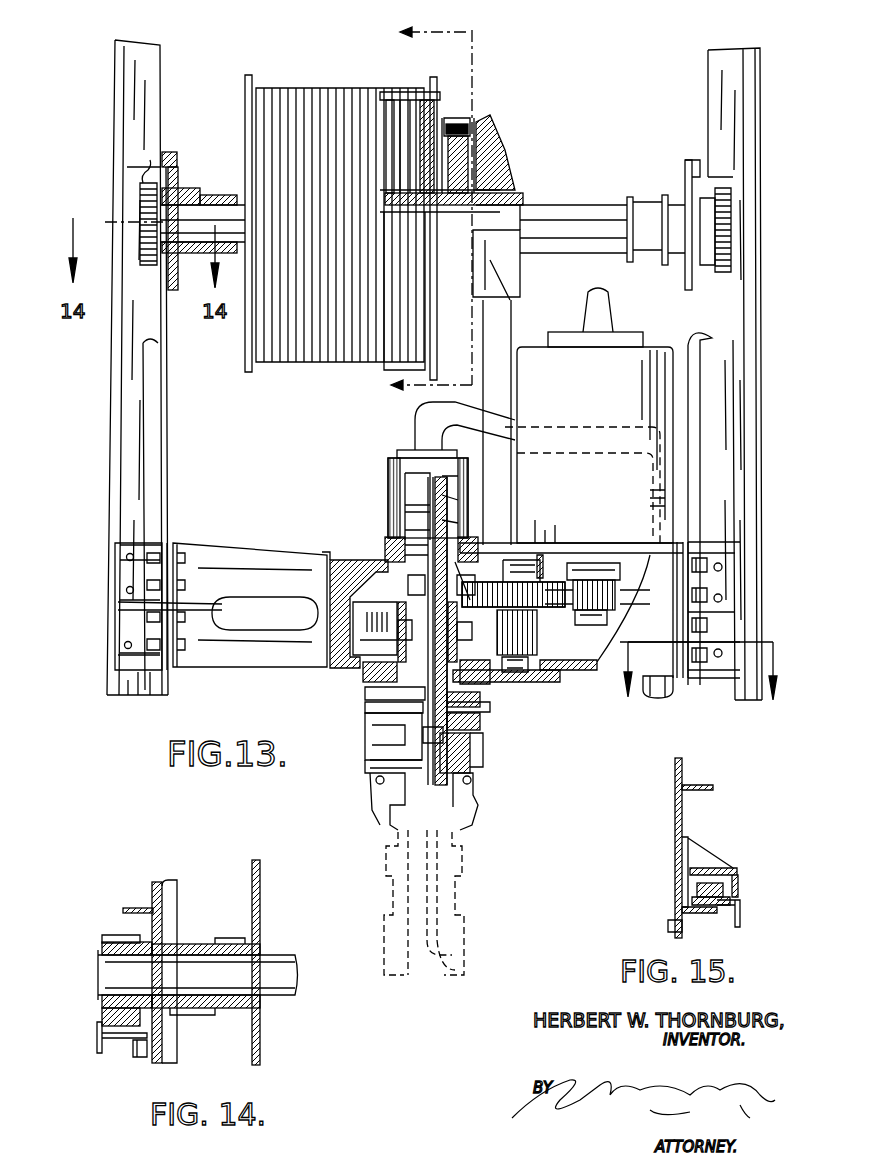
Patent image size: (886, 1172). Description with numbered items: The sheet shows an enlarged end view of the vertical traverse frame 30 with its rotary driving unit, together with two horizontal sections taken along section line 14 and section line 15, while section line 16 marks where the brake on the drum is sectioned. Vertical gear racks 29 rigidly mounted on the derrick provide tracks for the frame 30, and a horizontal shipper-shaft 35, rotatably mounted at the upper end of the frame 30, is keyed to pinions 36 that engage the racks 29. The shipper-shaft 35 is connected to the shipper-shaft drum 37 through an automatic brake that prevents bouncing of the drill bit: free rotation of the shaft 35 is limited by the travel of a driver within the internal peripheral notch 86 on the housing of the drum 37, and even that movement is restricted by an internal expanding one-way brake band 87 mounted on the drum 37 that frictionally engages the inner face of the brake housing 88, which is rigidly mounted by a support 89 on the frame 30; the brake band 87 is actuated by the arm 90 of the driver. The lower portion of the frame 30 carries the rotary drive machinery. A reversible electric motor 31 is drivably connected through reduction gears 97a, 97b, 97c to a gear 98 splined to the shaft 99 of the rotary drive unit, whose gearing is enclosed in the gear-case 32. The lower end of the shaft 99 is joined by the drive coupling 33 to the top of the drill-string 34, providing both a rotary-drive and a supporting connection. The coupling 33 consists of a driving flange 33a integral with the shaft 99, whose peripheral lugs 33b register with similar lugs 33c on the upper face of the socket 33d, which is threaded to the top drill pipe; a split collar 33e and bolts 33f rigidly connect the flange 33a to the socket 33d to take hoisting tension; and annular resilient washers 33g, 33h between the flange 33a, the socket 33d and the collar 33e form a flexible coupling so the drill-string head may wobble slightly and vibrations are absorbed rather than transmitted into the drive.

In FIG. 13, the section line 14— 14 is at (150, 70).
In FIG. 14, the section line 14— 14 is at (100, 1038).
In FIG. 15, the section line 14— 14 is at (742, 915).
In FIG. 13, the section line 15— 15 is at (705, 673).
In FIG. 13, the section line 16— 16 is at (411, 210).
In FIG. 14, the vertical gear racks 29 is at (103, 1015).
In FIG. 15, the vertical gear racks 29 is at (710, 887).
In FIG. 13, the vertical traverse frame 30 is at (716, 350).
In FIG. 14, the vertical traverse frame 30 is at (165, 1036).
In FIG. 15, the vertical traverse frame 30 is at (683, 812).
In FIG. 13, the electric motor 31 is at (540, 360).
In FIG. 13, the gear-case 32 is at (388, 468).
In FIG. 13, the drive coupling 33 is at (372, 688).
In FIG. 13, the driving flange 33a is at (370, 708).
In FIG. 13, the peripheral lugs 33b is at (372, 748).
In FIG. 13, the lugs 33c is at (368, 740).
In FIG. 13, the socket 33d is at (480, 755).
In FIG. 13, the split collar 33e is at (368, 694).
In FIG. 13, the bolts 33f is at (363, 680).
In FIG. 13, the annular resilient washer 33g is at (480, 728).
In FIG. 13, the annular resilient washer 33h is at (480, 700).
In FIG. 13, the drill-string 34 is at (440, 935).
In FIG. 13, the shipper-shaft 35 is at (565, 225).
In FIG. 14, the shipper-shaft 35 is at (196, 955).
In FIG. 13, the pinions 36 is at (150, 183).
In FIG. 14, the pinions 36 is at (124, 937).
In FIG. 13, the shipper-shaft drum 37 is at (318, 100).
In FIG. 14, the shipper-shaft drum 37 is at (252, 866).
In FIG. 13, the internal peripheral notch 86 is at (415, 92).
In FIG. 13, the one-way brake band 87 is at (462, 128).
In FIG. 13, the brake housing 88 is at (512, 184).
In FIG. 13, the support 89 is at (495, 392).
In FIG. 13, the arm of driver 90 is at (470, 160).
In FIG. 13, the reduction gear 97a is at (615, 580).
In FIG. 13, the reduction gear 97b is at (552, 600).
In FIG. 13, the reduction gear 97c is at (540, 643).
In FIG. 13, the gear 98 is at (486, 617).
In FIG. 13, the shaft 99 is at (398, 543).